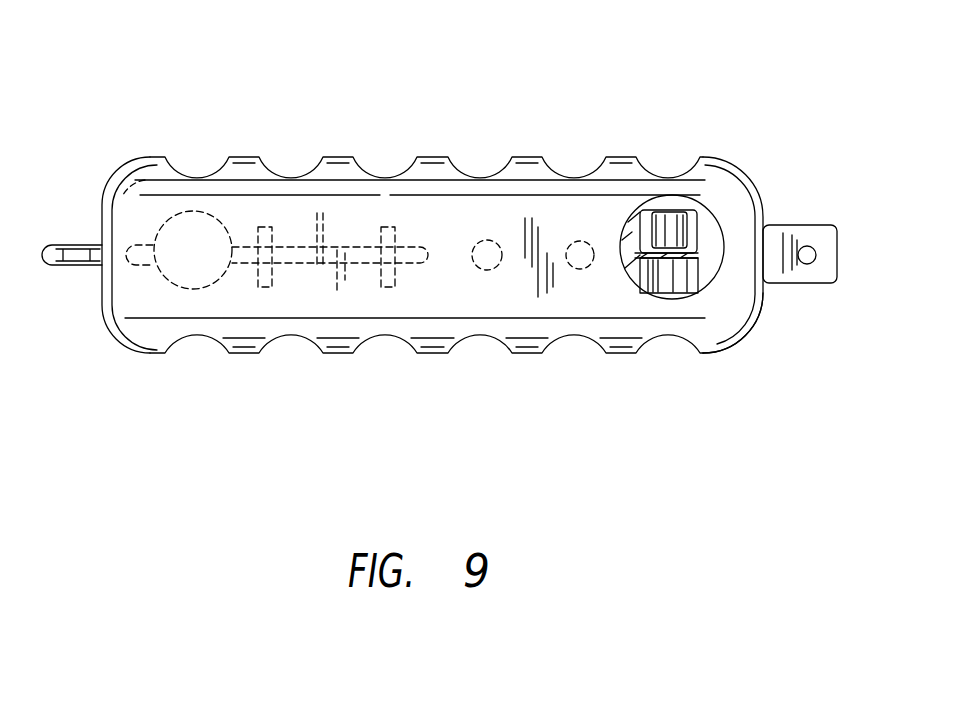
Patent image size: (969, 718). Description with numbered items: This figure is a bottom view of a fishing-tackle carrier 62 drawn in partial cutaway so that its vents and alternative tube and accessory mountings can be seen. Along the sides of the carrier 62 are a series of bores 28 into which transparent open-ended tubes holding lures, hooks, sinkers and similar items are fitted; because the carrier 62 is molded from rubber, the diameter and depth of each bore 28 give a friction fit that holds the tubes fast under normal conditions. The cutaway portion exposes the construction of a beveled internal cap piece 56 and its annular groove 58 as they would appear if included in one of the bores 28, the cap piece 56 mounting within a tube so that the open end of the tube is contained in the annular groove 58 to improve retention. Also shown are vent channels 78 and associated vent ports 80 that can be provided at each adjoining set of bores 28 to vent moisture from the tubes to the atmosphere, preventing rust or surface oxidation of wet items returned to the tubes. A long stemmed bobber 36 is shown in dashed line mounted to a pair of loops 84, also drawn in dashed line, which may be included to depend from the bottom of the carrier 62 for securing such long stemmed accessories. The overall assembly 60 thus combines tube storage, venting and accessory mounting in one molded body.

The bores 28 is at (198, 177).
The bobber 36 is at (162, 225).
The cap piece 56 is at (683, 218).
The annular groove 58 is at (698, 245).
The connector assembly 60 is at (655, 70).
The carrier 62 is at (752, 360).
The vent channels 78 is at (695, 268).
The vent ports 80 is at (578, 268).
The loops 84 is at (380, 282).